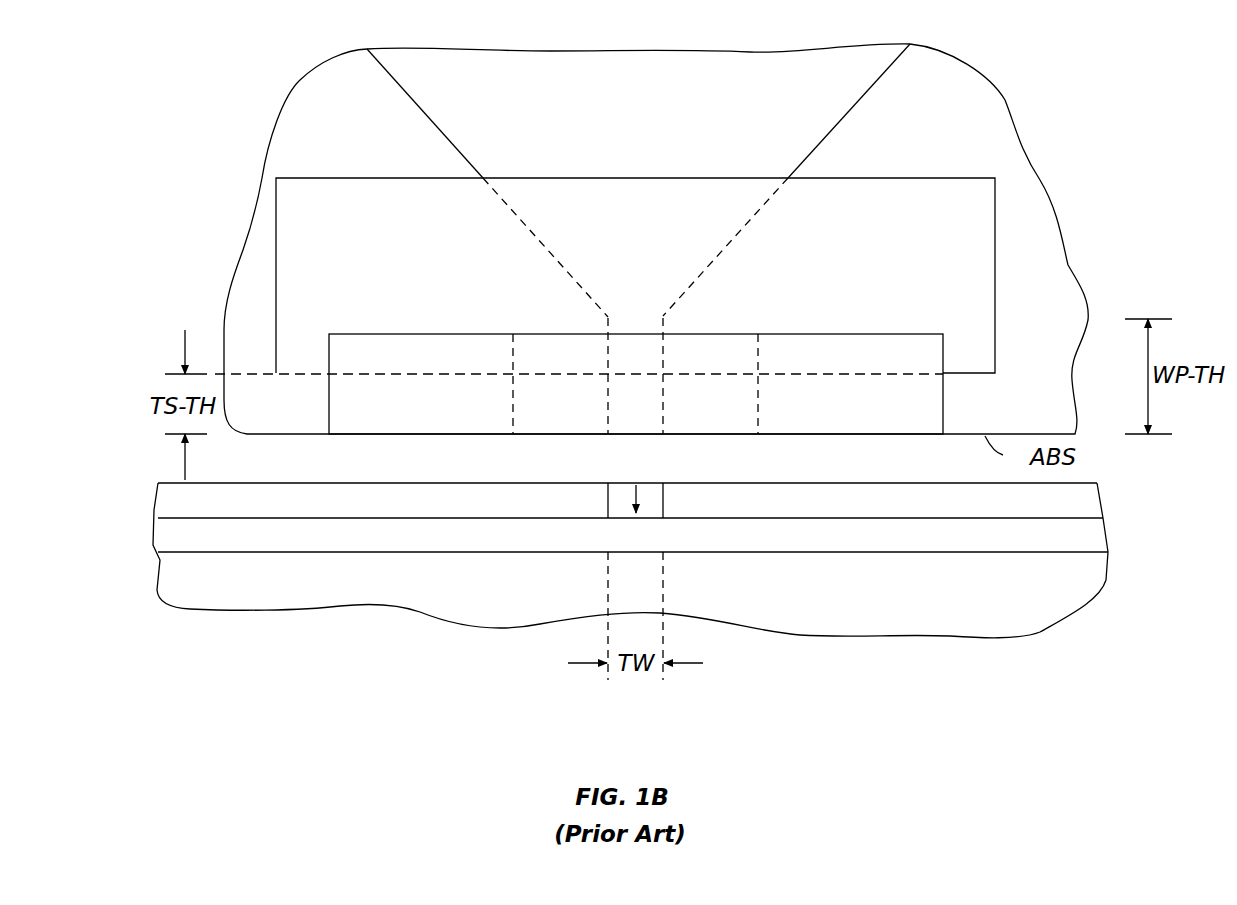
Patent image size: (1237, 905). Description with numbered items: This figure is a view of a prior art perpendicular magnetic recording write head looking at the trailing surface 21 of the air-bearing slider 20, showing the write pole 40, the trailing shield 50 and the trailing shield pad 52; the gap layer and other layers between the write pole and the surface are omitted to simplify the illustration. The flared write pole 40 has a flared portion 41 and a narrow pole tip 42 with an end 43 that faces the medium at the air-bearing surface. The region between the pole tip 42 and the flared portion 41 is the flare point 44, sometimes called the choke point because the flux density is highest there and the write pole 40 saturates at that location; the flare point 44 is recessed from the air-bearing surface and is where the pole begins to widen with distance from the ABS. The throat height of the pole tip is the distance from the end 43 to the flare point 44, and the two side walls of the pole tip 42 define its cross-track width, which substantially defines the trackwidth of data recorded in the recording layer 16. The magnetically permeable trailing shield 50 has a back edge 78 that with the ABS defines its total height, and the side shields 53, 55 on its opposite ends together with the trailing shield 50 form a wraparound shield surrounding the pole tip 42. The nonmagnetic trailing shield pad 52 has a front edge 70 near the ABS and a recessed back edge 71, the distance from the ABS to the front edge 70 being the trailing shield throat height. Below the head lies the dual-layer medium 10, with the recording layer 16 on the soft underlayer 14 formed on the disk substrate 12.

The medium 10 is at (667, 563).
The disk substrate 12 is at (1097, 570).
The soft underlayer 14 is at (1093, 537).
The perpendicular magnetic data recording layer 16 is at (1087, 502).
The air-bearing slider 20 is at (1013, 111).
The trailing surface 21 is at (943, 66).
The write pole 40 is at (698, 62).
The flared portion 41 is at (687, 257).
The pole tip 42 is at (625, 417).
The end 43 is at (635, 436).
The flare point 44 is at (665, 318).
The trailing shield 50 is at (718, 420).
The trailing shield pad 52 is at (297, 224).
The side shield 53 is at (862, 420).
The side shield 55 is at (437, 420).
The front edge 70 is at (970, 375).
The back edge 71 is at (923, 178).
The back edge 78 is at (855, 334).